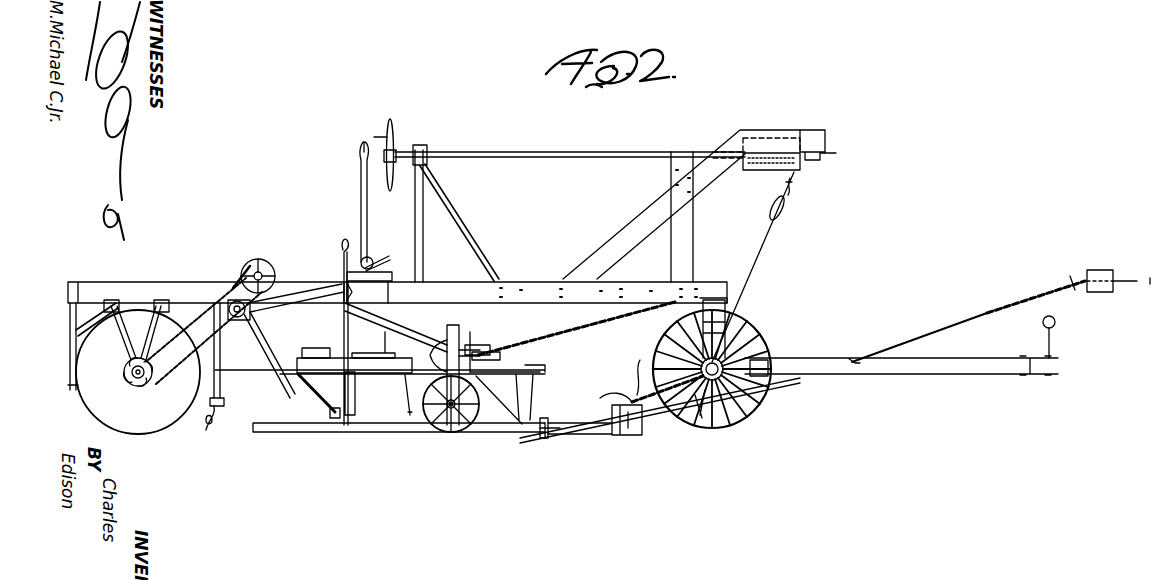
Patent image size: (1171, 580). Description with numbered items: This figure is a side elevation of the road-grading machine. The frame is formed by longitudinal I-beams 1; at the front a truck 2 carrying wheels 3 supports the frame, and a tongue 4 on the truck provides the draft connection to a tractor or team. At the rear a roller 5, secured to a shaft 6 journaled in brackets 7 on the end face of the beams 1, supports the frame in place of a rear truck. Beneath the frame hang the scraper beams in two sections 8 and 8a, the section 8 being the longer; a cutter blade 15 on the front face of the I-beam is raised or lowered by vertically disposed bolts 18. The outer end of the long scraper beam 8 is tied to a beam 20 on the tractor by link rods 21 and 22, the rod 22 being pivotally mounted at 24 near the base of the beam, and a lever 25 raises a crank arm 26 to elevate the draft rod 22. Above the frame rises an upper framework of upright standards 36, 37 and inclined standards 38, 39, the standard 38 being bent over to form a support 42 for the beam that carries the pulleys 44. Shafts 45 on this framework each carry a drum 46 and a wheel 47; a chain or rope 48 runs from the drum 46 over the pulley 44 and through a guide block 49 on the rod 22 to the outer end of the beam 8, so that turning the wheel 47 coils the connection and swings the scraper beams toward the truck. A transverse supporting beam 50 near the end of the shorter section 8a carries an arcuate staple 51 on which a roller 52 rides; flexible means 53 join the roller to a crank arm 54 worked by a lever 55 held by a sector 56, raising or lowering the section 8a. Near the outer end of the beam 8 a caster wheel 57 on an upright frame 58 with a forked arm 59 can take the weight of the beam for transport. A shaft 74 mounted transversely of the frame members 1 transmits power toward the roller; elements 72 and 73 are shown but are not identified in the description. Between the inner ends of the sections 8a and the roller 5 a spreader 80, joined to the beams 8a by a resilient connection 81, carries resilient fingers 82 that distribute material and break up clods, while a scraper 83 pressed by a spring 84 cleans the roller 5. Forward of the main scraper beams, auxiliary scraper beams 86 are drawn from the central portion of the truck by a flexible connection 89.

The I-beams 1 is at (520, 290).
The truck 2 is at (735, 303).
The wheels 3 is at (737, 410).
The tongue 4 is at (955, 372).
The roller 5 is at (138, 372).
The shaft 6 is at (205, 331).
The brackets 7 is at (125, 345).
The scraper beam section 8 is at (532, 378).
The scraper beam section 8a is at (315, 430).
The cutter blade 15 is at (548, 428).
The vertically disposed bolts 18 is at (358, 406).
The beam 20 is at (1100, 272).
The link rod 21 is at (940, 330).
The link rod 22 is at (728, 420).
The pivot 24 is at (525, 430).
The lever 25 is at (362, 292).
The crank arm 26 is at (595, 418).
The upright standard 36 is at (696, 234).
The upright standard 37 is at (432, 253).
The inclined standard 38 is at (598, 240).
The inclined standard 39 is at (468, 208).
The support 42 is at (828, 141).
The pulleys 44 is at (786, 208).
The shafts 45 is at (585, 150).
The drum 46 is at (766, 168).
The wheel 47 is at (394, 130).
The chain or rope 48 is at (762, 264).
The guide block 49 is at (700, 422).
The transverse supporting beam 50 is at (313, 366).
The arcuate staple 51 is at (328, 350).
The roller 52 is at (384, 350).
The flexible means 53 is at (390, 325).
The crank arm 54 is at (377, 257).
The lever 55 is at (359, 170).
The sector 56 is at (349, 250).
The caster wheel 57 is at (449, 432).
The upright frame 58 is at (462, 336).
The forked arm 59 is at (518, 398).
The hub 72 is at (128, 385).
The sprocket 73 is at (154, 380).
The shaft 74 is at (260, 259).
The spreader 80 is at (222, 320).
The resilient connection 81 is at (228, 363).
The resilient fingers 82 is at (216, 429).
The scraper 83 is at (68, 312).
The spring 84 is at (97, 325).
The auxiliary scraper beams 86 is at (600, 396).
The flexible connection 89 is at (576, 348).